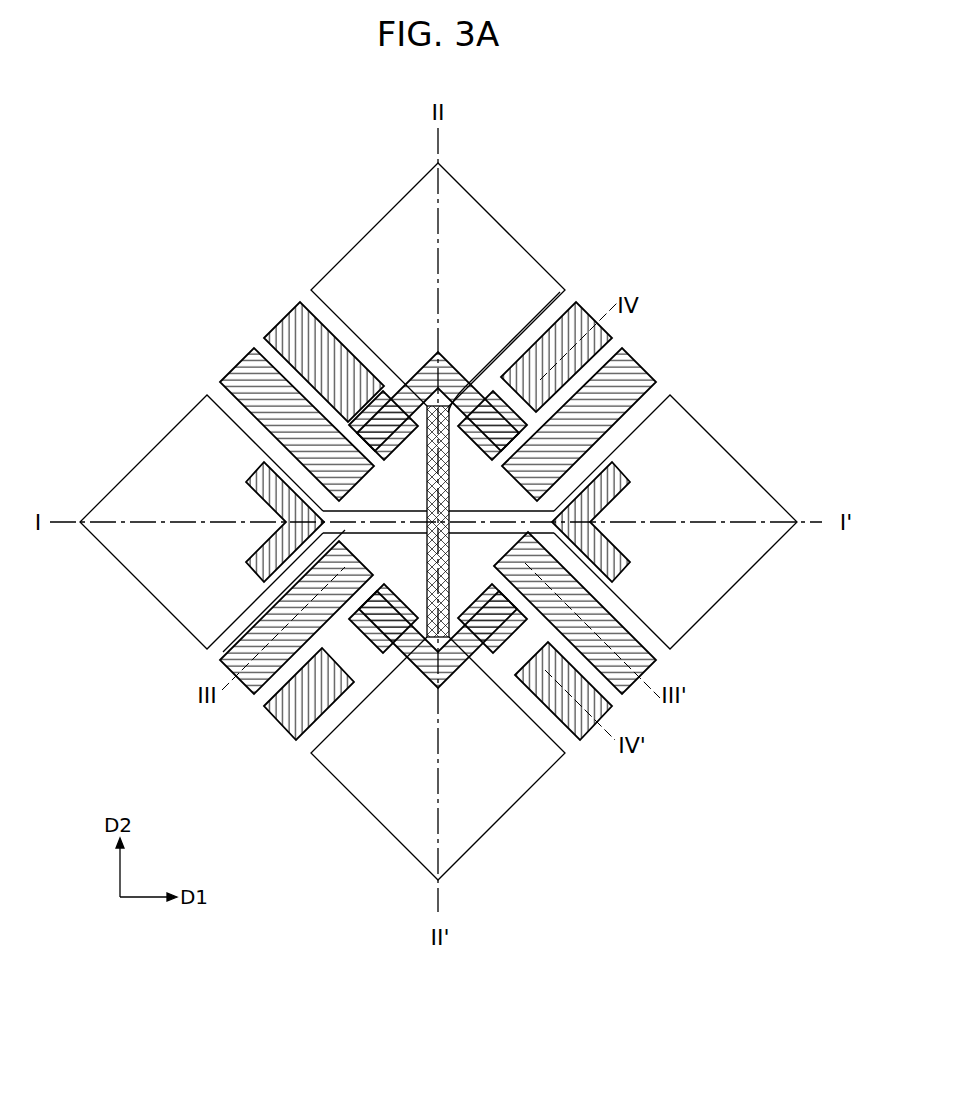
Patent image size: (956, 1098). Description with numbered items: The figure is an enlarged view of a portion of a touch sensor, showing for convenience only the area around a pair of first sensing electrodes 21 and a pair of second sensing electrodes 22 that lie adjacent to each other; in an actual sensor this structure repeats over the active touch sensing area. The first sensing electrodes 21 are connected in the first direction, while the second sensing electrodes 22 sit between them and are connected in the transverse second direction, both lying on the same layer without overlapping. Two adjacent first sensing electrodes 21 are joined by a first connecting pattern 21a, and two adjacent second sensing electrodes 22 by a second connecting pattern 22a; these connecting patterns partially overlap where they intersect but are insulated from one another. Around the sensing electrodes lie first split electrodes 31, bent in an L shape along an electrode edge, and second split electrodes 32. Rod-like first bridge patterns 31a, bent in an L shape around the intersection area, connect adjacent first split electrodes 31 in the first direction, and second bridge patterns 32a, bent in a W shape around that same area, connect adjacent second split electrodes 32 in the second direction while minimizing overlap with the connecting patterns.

The first sensing electrode 21 is at (145, 465).
The first connecting pattern 21a is at (223, 652).
The second sensing electrode 22 is at (373, 238).
The second connecting pattern 22a is at (560, 292).
The first split electrode 31 is at (232, 368).
The first bridge pattern 31a is at (430, 660).
The second split electrode 32 is at (277, 327).
The second bridge pattern 32a is at (627, 460).